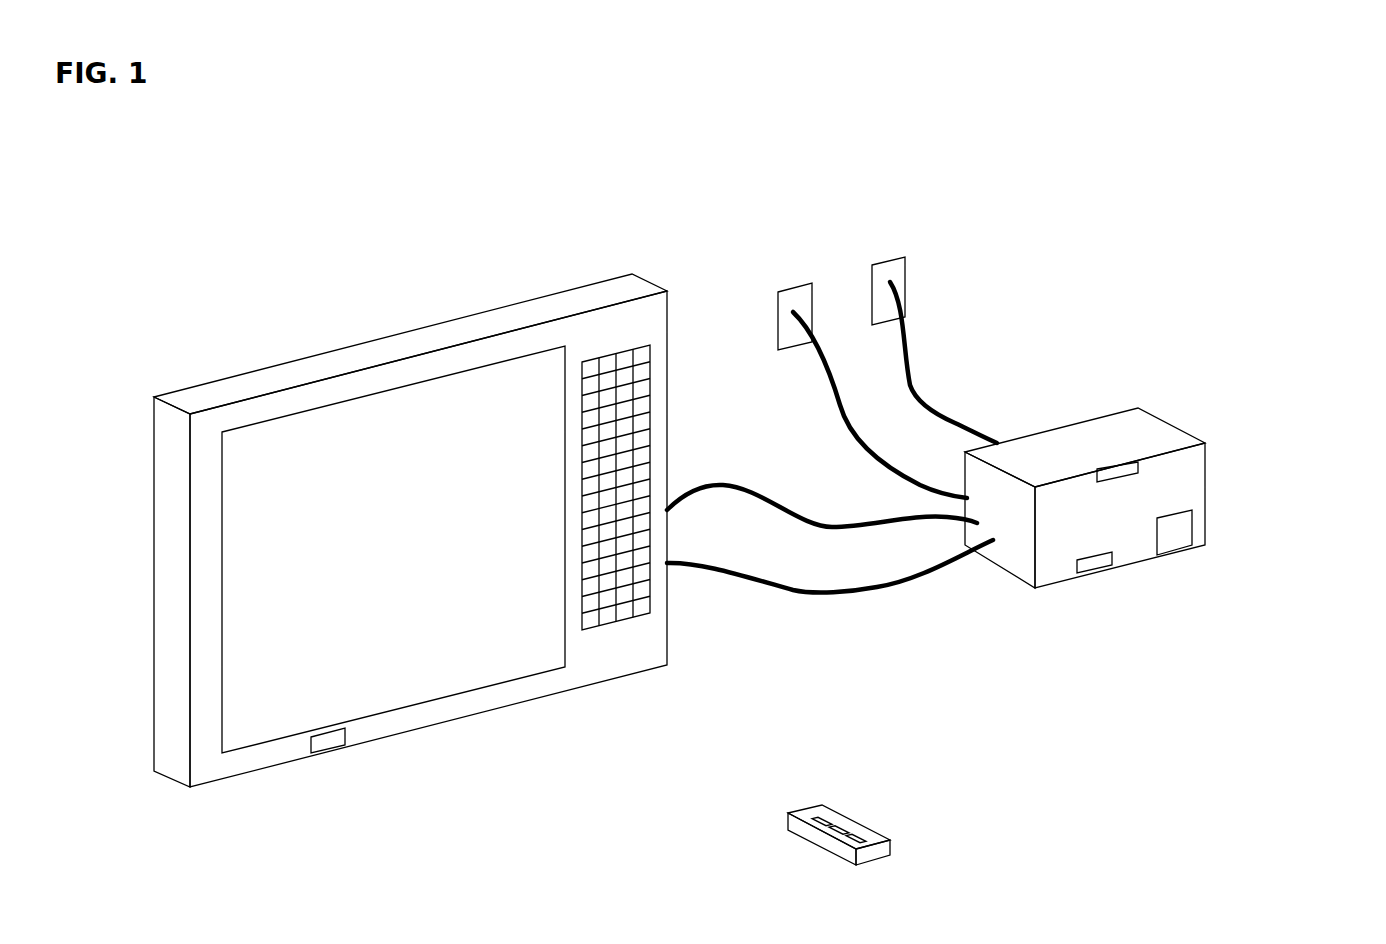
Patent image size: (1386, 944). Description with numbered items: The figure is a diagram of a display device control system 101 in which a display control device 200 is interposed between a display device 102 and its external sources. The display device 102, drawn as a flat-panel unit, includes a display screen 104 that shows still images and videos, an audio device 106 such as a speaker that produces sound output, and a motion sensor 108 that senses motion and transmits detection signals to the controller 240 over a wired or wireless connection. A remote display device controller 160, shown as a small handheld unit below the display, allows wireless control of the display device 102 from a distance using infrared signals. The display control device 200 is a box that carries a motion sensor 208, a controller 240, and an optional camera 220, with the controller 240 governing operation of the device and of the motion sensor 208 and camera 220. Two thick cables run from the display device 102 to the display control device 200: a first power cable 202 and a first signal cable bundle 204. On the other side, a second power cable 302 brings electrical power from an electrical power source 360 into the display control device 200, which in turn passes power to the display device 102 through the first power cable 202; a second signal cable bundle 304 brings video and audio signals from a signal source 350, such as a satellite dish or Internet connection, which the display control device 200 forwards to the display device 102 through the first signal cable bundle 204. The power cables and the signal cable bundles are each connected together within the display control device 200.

The display device control system 101 is at (1290, 112).
The display device 102 is at (462, 720).
The display screen 104 is at (283, 415).
The audio device 106 is at (617, 352).
The motion sensor 108 is at (333, 745).
The remote display device controller 160 is at (890, 838).
The display control device 200 is at (1207, 508).
The first power cable 202 is at (795, 593).
The first signal cable bundle 204 is at (770, 490).
The motion sensor 208 is at (1088, 577).
The camera 220 is at (1130, 462).
The controller 240 is at (1168, 555).
The second power cable 302 is at (988, 437).
The second signal cable bundle 304 is at (832, 400).
The signal source 350 is at (795, 283).
The electrical power source 360 is at (890, 258).